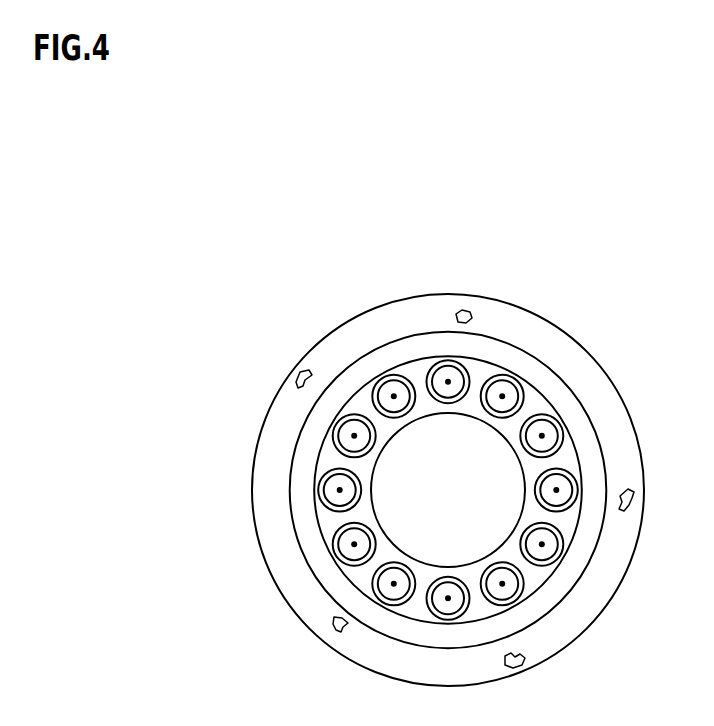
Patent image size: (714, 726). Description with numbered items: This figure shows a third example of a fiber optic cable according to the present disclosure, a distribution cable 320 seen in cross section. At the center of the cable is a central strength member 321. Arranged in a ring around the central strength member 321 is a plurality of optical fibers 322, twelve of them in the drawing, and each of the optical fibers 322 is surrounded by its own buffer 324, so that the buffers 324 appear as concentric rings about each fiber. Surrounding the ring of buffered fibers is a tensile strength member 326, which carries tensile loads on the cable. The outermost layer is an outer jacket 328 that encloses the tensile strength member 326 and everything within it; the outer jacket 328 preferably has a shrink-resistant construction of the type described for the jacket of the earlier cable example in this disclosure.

The distribution cable 320 is at (468, 252).
The central strength member 321 is at (385, 548).
The optical fibers 322 is at (450, 380).
The buffers 324 is at (423, 363).
The tensile strength member 326 is at (350, 365).
The outer jacket 328 is at (263, 423).